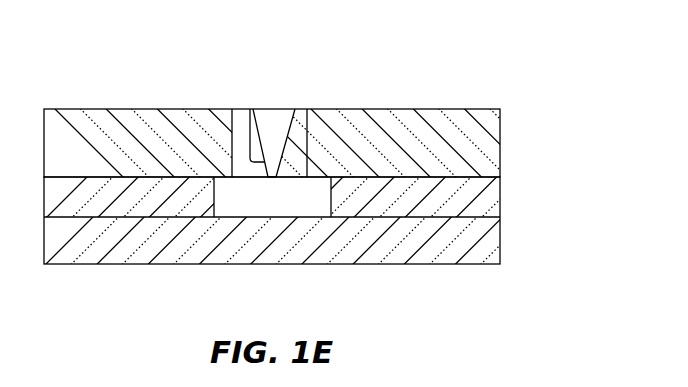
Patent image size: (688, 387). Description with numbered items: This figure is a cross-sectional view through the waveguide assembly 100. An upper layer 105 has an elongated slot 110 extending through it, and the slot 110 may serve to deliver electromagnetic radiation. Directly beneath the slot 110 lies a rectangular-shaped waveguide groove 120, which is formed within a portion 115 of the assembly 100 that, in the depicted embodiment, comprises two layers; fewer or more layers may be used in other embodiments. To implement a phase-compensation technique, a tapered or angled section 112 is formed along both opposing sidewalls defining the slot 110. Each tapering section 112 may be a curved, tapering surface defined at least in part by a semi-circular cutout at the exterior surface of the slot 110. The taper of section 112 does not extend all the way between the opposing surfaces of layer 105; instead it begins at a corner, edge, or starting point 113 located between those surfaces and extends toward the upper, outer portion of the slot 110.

The waveguide assembly 100 is at (517, 103).
The layer 105 is at (442, 122).
The elongated slot 110 is at (259, 107).
The tapered section 112 is at (279, 116).
The starting point of the taper 113 is at (279, 162).
The portion 115 is at (515, 177).
The waveguide groove 120 is at (290, 210).